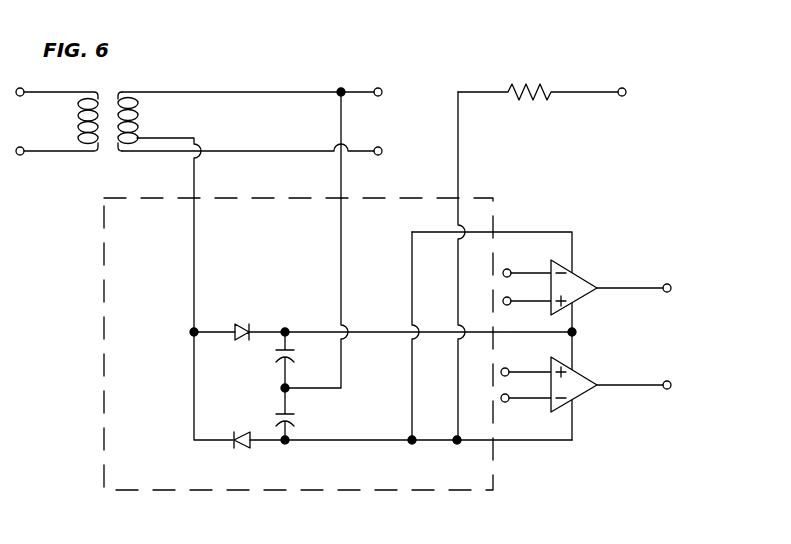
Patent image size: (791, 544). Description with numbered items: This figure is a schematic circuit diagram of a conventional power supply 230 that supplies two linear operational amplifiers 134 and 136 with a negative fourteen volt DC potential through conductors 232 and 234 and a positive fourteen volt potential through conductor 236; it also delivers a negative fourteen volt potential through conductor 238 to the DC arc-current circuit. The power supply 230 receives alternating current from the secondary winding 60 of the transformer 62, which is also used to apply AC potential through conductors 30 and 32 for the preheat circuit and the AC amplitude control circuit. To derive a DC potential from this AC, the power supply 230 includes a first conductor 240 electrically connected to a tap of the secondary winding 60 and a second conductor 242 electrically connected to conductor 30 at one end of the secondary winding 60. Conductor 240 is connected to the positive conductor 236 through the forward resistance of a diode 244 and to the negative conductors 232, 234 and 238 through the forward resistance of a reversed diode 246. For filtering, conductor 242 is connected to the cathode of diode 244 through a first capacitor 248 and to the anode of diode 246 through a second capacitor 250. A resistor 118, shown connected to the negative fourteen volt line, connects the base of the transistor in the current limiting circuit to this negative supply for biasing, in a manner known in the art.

The transformer 62 is at (102, 82).
The secondary winding 60 is at (118, 90).
The conductor 30 is at (288, 92).
The conductor 32 is at (292, 151).
The resistor 118 is at (523, 88).
The conductor 238 is at (458, 162).
The first conductor 240 is at (194, 270).
The second conductor 242 is at (341, 274).
The diode 244 is at (236, 324).
The reversed diode 246 is at (238, 447).
The first capacitor 248 is at (272, 350).
The second capacitor 250 is at (272, 412).
The conductor 234 is at (518, 232).
The conductor 236 is at (551, 332).
The conductor 232 is at (524, 440).
The linear operational amplifier 134 is at (586, 280).
The linear operational amplifier 136 is at (583, 374).
The power supply 230 is at (132, 408).